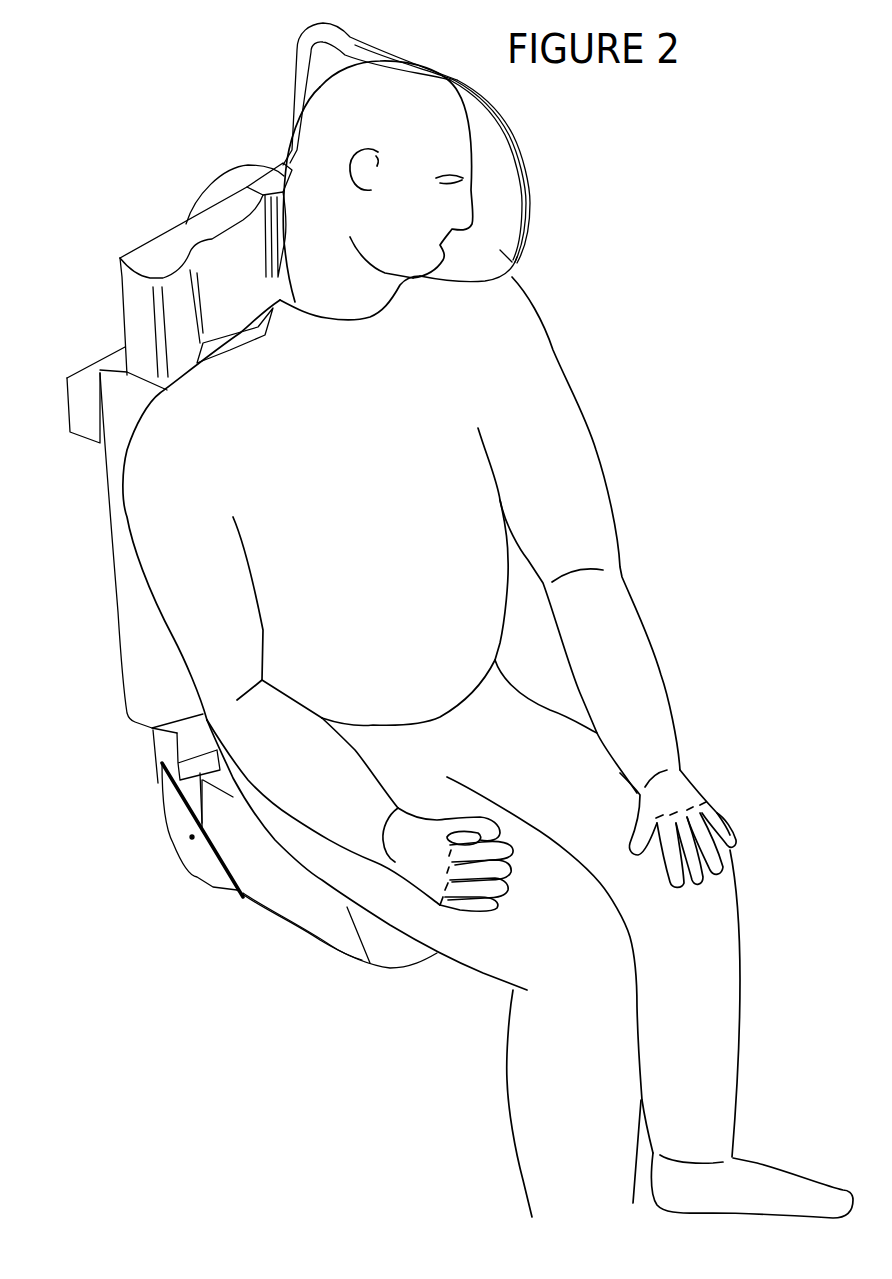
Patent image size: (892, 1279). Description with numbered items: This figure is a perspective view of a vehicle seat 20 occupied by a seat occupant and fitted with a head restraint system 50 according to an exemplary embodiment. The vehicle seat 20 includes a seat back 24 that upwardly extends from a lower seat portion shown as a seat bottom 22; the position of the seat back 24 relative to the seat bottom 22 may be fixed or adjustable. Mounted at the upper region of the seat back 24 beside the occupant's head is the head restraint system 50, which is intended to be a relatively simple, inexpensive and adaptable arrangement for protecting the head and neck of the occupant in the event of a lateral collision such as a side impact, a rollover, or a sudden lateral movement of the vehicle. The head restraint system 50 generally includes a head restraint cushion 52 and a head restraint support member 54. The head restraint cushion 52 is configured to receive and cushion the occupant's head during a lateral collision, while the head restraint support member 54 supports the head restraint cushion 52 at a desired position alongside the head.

The vehicle seat 20 is at (82, 208).
The seat bottom 22 is at (297, 933).
The seat back 24 is at (118, 610).
The head restraint system 50 is at (547, 125).
The head restraint cushion 52 is at (507, 258).
The head restraint support member 54 is at (300, 50).